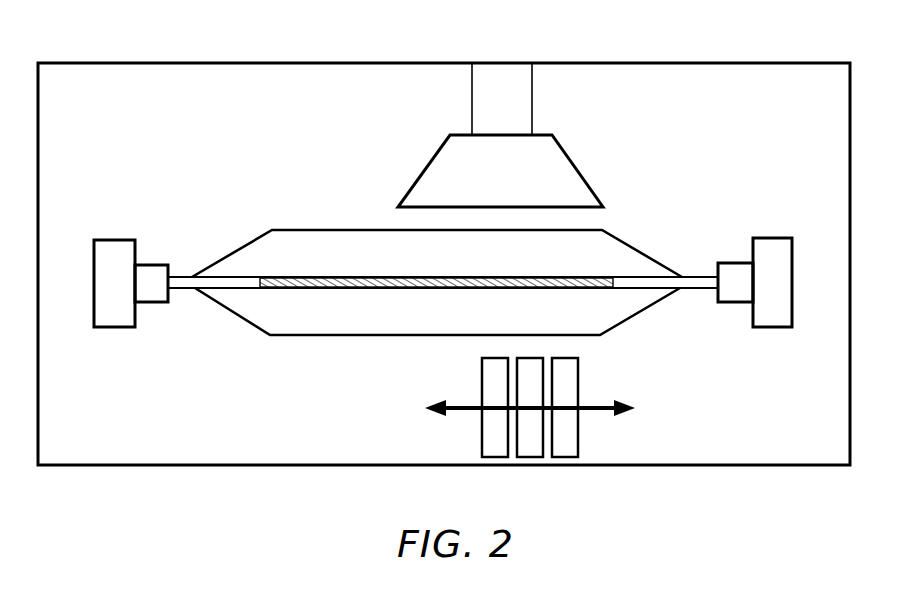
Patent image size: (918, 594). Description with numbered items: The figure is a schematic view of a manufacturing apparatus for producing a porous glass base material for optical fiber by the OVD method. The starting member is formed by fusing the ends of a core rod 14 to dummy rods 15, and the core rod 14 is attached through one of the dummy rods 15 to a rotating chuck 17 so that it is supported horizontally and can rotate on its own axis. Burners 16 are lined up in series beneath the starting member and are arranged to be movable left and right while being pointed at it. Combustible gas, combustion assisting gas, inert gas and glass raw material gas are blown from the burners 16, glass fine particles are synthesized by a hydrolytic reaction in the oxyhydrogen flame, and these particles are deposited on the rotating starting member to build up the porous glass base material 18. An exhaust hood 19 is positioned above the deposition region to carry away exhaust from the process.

The core rod 14 is at (295, 289).
The dummy rods 15 is at (190, 291).
The burners 16 is at (539, 408).
The rotating chuck 17 is at (436, 254).
The porous glass base material 18 is at (308, 250).
The exhaust hood 19 is at (500, 135).